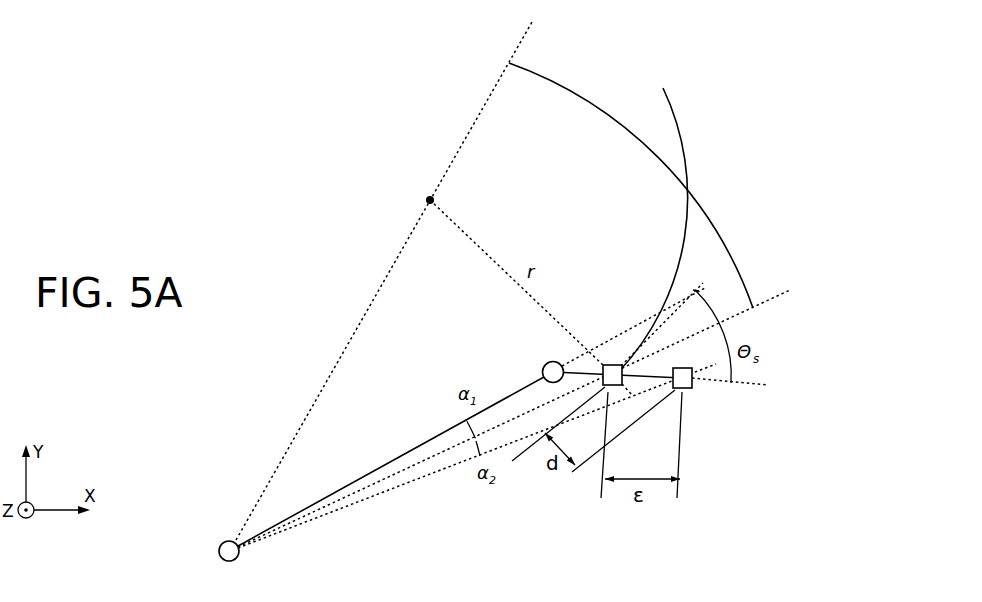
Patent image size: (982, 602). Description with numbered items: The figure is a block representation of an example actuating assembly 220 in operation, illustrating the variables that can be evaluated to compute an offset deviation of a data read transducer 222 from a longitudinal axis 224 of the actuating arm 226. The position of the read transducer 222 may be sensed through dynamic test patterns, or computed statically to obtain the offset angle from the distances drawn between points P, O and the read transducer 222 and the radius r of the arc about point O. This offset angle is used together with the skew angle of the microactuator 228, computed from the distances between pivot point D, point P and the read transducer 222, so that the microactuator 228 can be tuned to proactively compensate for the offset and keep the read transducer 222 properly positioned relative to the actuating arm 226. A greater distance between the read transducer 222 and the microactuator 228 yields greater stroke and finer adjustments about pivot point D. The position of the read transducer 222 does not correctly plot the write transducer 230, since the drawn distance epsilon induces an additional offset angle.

The actuating assembly 220 is at (298, 79).
The data read transducer 222 is at (600, 357).
The longitudinal axis 224 is at (654, 320).
The actuating arm 226 is at (318, 503).
The microactuator 228 is at (542, 369).
The write transducer 230 is at (691, 388).